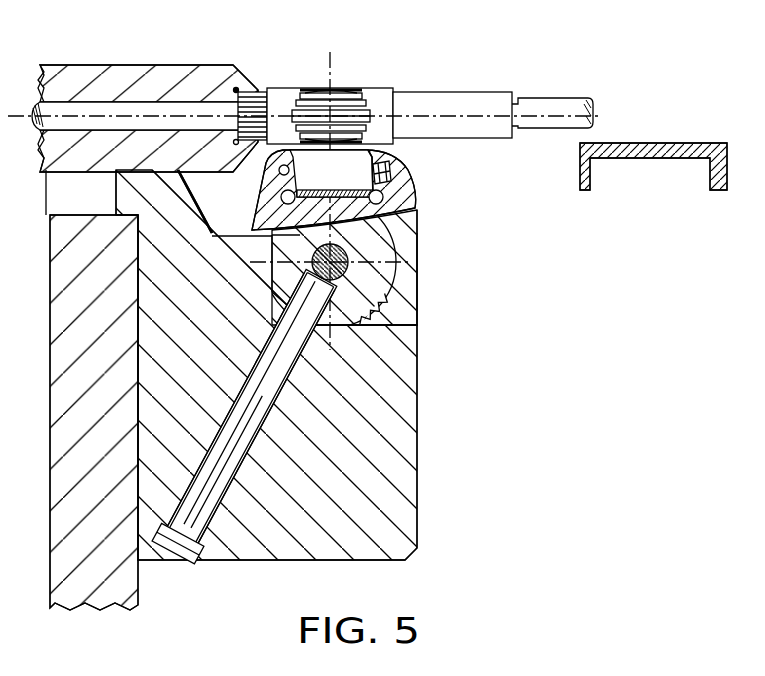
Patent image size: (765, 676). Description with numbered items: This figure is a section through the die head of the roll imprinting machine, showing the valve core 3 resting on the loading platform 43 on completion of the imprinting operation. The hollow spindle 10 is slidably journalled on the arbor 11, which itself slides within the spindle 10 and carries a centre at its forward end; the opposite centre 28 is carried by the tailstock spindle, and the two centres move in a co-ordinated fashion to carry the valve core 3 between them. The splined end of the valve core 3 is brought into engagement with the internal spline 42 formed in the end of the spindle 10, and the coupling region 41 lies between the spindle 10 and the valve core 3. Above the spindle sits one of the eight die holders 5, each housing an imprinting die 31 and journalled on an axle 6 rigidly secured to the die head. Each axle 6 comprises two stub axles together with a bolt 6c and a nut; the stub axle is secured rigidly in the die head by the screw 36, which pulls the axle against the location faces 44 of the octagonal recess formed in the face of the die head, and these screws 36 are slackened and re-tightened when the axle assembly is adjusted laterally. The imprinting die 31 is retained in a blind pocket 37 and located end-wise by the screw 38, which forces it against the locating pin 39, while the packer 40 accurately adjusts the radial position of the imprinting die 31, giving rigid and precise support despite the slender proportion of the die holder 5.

The spindle 10 is at (100, 70).
The arbor 11 is at (175, 108).
The internal spline 42 is at (258, 90).
The coupling 41 is at (357, 118).
The valve core 3 is at (455, 100).
The centre 28 is at (540, 105).
The loading platform 43 is at (605, 150).
The blind pocket 37 is at (388, 168).
The screw 38 is at (358, 177).
The imprinting die 31 is at (365, 191).
The locating pin 39 is at (262, 190).
The packer 40 is at (350, 199).
The die holder 5 is at (417, 260).
The bolt 6c is at (403, 272).
The axle 6 is at (384, 281).
The screw 36 is at (262, 407).
The location faces 44 is at (262, 275).